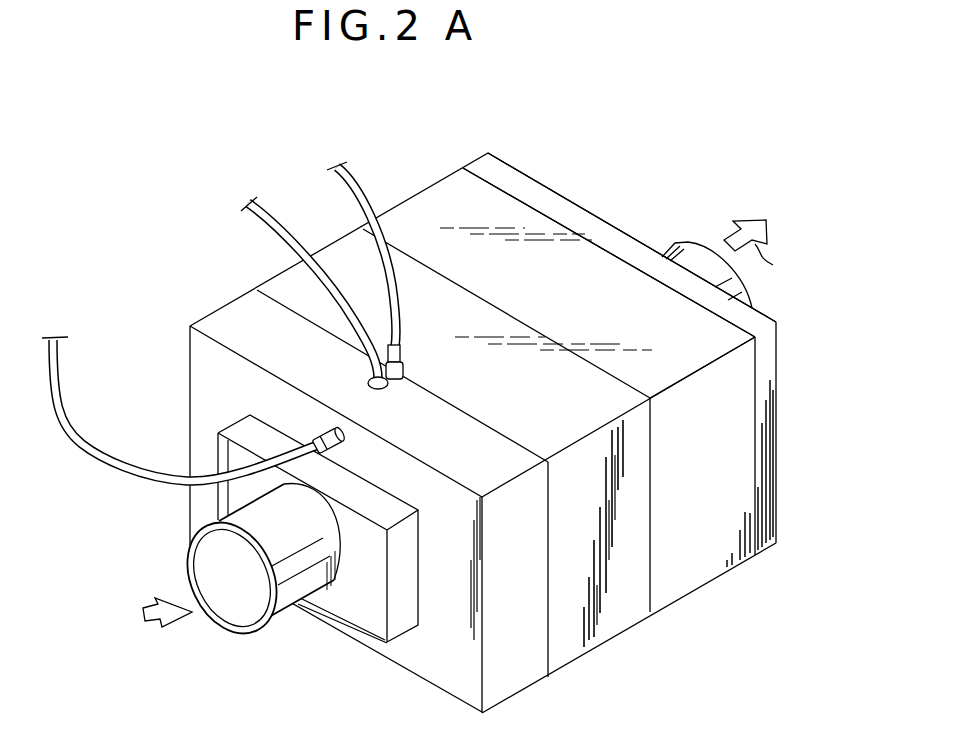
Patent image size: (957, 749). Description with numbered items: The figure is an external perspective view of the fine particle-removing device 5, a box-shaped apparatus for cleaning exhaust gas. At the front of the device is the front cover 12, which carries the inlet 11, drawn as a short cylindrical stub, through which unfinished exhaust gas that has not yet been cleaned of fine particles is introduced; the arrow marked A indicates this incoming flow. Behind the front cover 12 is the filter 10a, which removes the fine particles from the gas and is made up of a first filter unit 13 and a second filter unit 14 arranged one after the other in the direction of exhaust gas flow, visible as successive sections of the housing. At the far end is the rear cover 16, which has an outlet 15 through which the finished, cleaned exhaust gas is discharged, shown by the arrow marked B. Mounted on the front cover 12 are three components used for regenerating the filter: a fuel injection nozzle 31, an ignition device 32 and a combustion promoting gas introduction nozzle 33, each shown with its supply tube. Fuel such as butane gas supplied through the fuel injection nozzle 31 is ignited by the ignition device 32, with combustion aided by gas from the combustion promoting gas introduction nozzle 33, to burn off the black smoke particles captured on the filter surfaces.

The fine particle-removing device 5 is at (413, 158).
The filter 10a is at (483, 423).
The inlet 11 is at (293, 598).
The front cover 12 is at (420, 664).
The first filter unit 13 is at (625, 631).
The second filter unit 14 is at (707, 583).
The outlet 15 is at (673, 250).
The rear cover 16 is at (557, 192).
The fuel injection nozzle 31 is at (343, 441).
The ignition device 32 is at (385, 392).
The combustion promoting gas introduction nozzle 33 is at (404, 372).